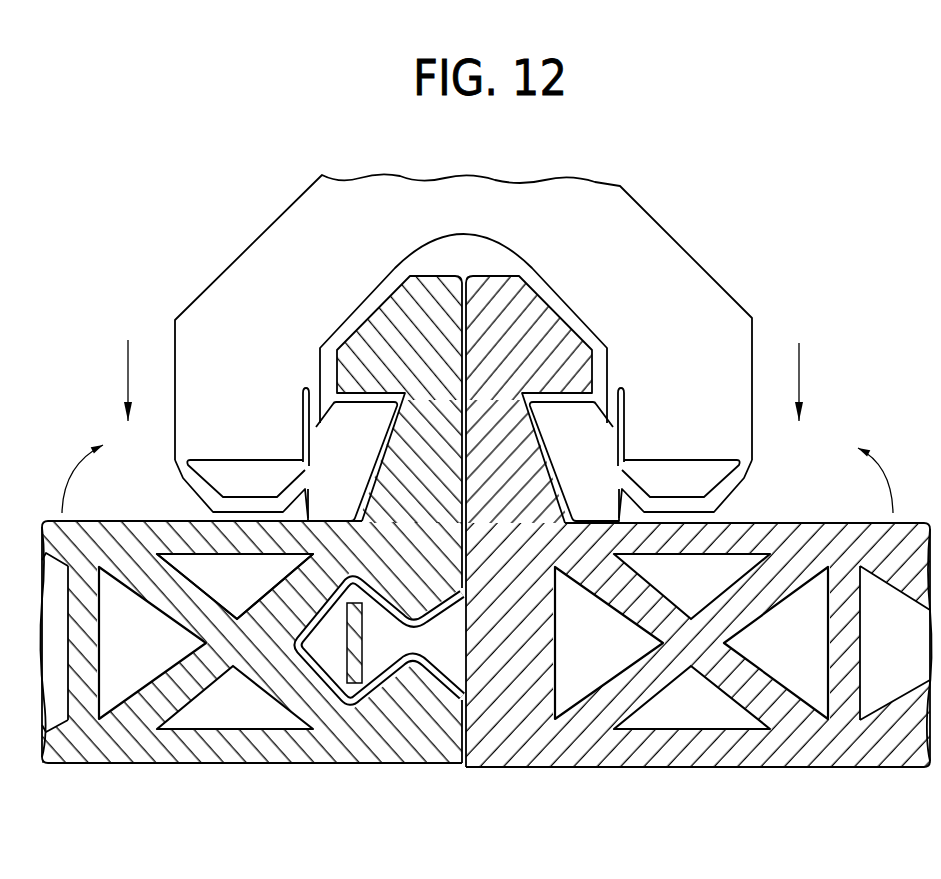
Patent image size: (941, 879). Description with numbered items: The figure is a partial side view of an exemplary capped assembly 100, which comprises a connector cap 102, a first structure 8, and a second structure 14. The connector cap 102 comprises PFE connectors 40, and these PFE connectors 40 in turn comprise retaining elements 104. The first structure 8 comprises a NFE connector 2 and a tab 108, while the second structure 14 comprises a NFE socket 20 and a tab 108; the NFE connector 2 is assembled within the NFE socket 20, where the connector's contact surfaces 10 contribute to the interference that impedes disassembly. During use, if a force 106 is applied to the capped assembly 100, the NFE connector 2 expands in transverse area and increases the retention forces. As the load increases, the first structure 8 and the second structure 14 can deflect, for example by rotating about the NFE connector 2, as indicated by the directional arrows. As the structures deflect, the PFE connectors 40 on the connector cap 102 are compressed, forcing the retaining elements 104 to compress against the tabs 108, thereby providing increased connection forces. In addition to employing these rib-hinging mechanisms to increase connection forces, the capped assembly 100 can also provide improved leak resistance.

The capped assembly 100 is at (802, 250).
The connector cap 102 is at (650, 252).
The retaining elements 104 is at (357, 467).
The force 106 is at (128, 362).
The tab 108 is at (424, 358).
The connector's contact surfaces 10 is at (220, 472).
The PFE connectors 40 is at (735, 494).
The first structure 8 is at (832, 530).
The second structure 14 is at (232, 760).
The NFE socket 20 is at (297, 584).
The NFE connector 2 is at (383, 652).